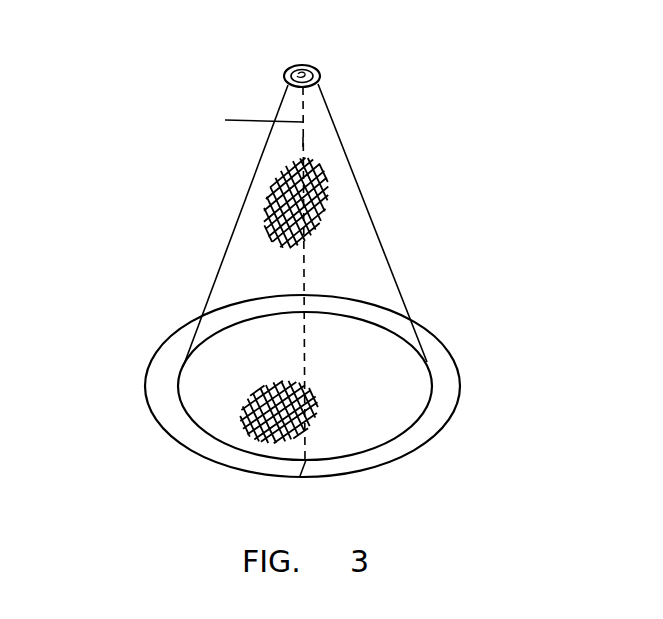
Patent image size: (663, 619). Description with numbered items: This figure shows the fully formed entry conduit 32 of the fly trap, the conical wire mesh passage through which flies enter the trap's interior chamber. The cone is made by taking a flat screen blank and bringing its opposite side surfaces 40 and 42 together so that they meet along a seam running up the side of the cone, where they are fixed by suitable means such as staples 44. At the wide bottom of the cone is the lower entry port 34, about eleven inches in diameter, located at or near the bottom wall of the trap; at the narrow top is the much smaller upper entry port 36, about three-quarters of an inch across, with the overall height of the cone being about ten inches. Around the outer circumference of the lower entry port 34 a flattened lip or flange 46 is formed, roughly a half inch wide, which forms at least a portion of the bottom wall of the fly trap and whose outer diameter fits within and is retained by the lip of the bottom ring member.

The entry conduit 32 is at (225, 225).
The lower entry port 34 is at (372, 427).
The upper entry port 36 is at (316, 68).
The side surface 40 is at (244, 119).
The side surface 42 is at (303, 121).
The staples 44 is at (303, 142).
The flange 46 is at (450, 388).